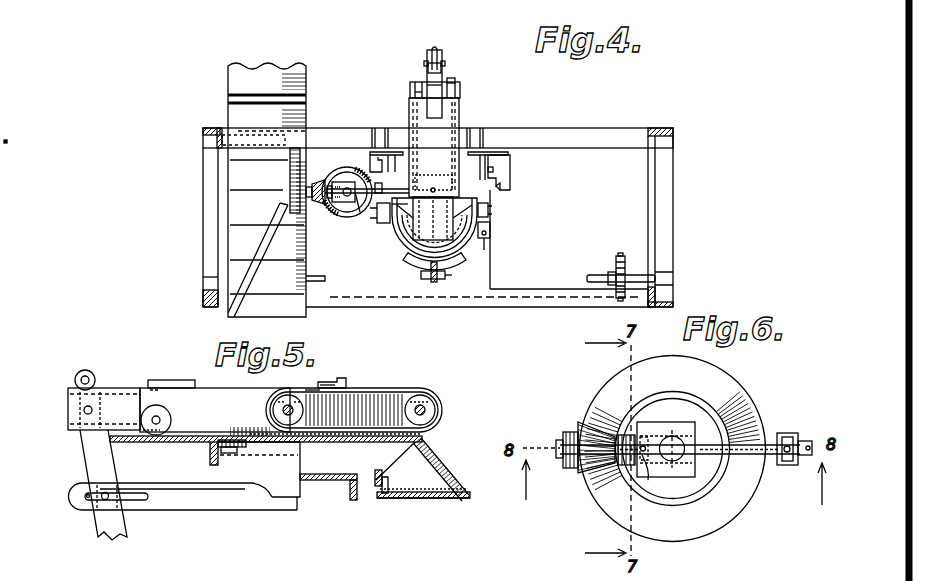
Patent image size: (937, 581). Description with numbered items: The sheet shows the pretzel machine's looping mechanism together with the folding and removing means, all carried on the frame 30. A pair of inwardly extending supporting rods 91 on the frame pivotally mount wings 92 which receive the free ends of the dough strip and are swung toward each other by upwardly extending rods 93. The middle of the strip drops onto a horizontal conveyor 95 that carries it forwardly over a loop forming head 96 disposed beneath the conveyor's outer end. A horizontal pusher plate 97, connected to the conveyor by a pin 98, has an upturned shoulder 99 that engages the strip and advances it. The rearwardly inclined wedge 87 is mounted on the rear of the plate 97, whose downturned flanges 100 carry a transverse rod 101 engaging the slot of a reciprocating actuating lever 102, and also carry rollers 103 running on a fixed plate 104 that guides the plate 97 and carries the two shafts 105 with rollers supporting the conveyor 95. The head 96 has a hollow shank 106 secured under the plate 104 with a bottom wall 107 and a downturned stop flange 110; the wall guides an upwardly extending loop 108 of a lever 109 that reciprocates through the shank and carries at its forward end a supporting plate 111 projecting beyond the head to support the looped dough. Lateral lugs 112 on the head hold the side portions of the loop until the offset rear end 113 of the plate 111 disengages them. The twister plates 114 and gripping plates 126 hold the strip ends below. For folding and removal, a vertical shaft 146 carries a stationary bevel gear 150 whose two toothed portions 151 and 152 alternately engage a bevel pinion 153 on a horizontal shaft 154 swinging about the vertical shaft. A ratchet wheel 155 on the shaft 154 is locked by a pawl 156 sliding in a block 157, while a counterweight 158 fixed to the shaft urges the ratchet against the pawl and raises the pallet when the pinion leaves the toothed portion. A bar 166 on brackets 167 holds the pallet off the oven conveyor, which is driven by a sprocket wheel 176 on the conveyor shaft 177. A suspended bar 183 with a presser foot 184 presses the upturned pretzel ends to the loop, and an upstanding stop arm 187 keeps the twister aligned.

In FIG. 4, the frame 30 is at (636, 128).
In FIG. 5, the frame 30 is at (210, 462).
In FIG. 4, the wedge 87 is at (438, 98).
In FIG. 5, the wedge 87 is at (175, 380).
In FIG. 4, the supporting rods 91 is at (505, 151).
In FIG. 4, the wings 92 is at (511, 165).
In FIG. 4, the upwardly extending rods 93 is at (503, 180).
In FIG. 4, the conveyor 95 is at (470, 242).
In FIG. 5, the conveyor 95 is at (404, 392).
In FIG. 5, the loop forming head 96 is at (445, 467).
In FIG. 4, the pusher plate 97 is at (455, 124).
In FIG. 5, the pusher plate 97 is at (305, 388).
In FIG. 5, the pin 98 is at (340, 380).
In FIG. 5, the upturned shoulder 99 is at (348, 380).
In FIG. 4, the downturned flanges 100 is at (438, 55).
In FIG. 5, the downturned flanges 100 is at (75, 432).
In FIG. 4, the transverse rod 101 is at (442, 67).
In FIG. 5, the transverse rod 101 is at (84, 412).
In FIG. 4, the actuating lever 102 is at (433, 48).
In FIG. 5, the actuating lever 102 is at (102, 536).
In FIG. 4, the rollers 103 is at (450, 80).
In FIG. 5, the rollers 103 is at (146, 408).
In FIG. 4, the fixed plate 104 is at (460, 83).
In FIG. 5, the fixed plate 104 is at (178, 444).
In FIG. 5, the shafts 105 is at (280, 410).
In FIG. 5, the shank 106 is at (337, 458).
In FIG. 5, the bottom wall 107 is at (305, 482).
In FIG. 5, the loop 108 is at (378, 487).
In FIG. 5, the lever 109 is at (240, 512).
In FIG. 5, the stop flange 110 is at (353, 501).
In FIG. 4, the supporting plate 111 is at (402, 250).
In FIG. 5, the supporting plate 111 is at (450, 499).
In FIG. 4, the lugs 112 is at (488, 204).
In FIG. 5, the lugs 112 is at (386, 494).
In FIG. 5, the offset rear end 113 is at (408, 499).
In FIG. 4, the plates 114 is at (492, 236).
In FIG. 4, the gripping plates 126 is at (492, 200).
In FIG. 4, the vertical shaft 146 is at (347, 196).
In FIG. 6, the vertical shaft 146 is at (684, 478).
In FIG. 4, the bevel gear 150 is at (354, 165).
In FIG. 6, the bevel gear 150 is at (740, 380).
In FIG. 6, the toothed portion 151 is at (735, 410).
In FIG. 6, the toothed portion 152 is at (605, 498).
In FIG. 4, the bevel pinion 153 is at (325, 180).
In FIG. 6, the bevel pinion 153 is at (594, 470).
In FIG. 4, the horizontal shaft 154 is at (400, 187).
In FIG. 6, the horizontal shaft 154 is at (568, 432).
In FIG. 6, the ratchet wheel 155 is at (626, 434).
In FIG. 6, the pawl 156 is at (645, 458).
In FIG. 4, the block 157 is at (358, 214).
In FIG. 6, the block 157 is at (695, 472).
In FIG. 4, the counterweight 158 is at (383, 185).
In FIG. 6, the counterweight 158 is at (790, 432).
In FIG. 4, the bar 166 is at (292, 175).
In FIG. 4, the brackets 167 is at (240, 128).
In FIG. 4, the third sprocket wheel 176 is at (627, 262).
In FIG. 4, the conveyor shaft 177 is at (645, 272).
In FIG. 4, the bar 183 is at (440, 282).
In FIG. 4, the presser foot 184 is at (450, 276).
In FIG. 4, the stop arm 187 is at (236, 82).